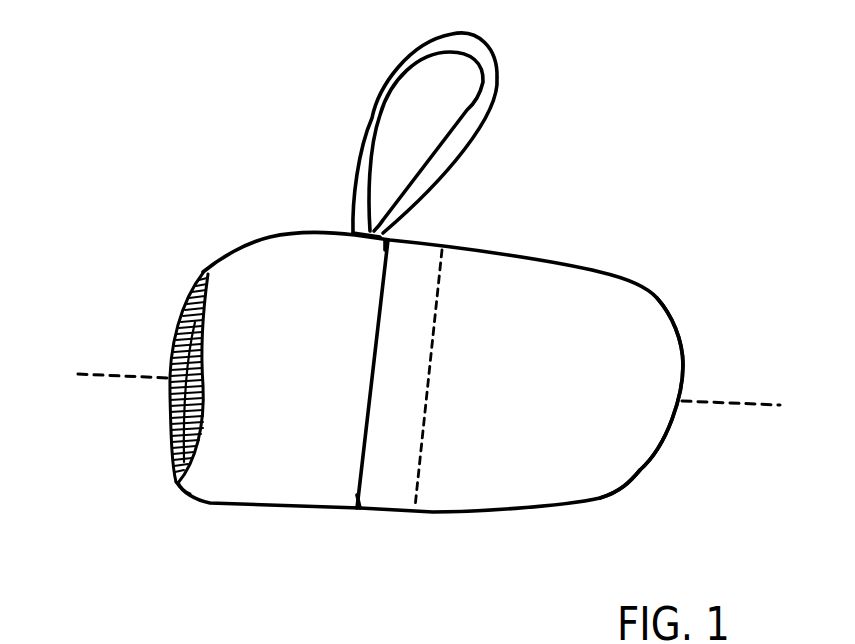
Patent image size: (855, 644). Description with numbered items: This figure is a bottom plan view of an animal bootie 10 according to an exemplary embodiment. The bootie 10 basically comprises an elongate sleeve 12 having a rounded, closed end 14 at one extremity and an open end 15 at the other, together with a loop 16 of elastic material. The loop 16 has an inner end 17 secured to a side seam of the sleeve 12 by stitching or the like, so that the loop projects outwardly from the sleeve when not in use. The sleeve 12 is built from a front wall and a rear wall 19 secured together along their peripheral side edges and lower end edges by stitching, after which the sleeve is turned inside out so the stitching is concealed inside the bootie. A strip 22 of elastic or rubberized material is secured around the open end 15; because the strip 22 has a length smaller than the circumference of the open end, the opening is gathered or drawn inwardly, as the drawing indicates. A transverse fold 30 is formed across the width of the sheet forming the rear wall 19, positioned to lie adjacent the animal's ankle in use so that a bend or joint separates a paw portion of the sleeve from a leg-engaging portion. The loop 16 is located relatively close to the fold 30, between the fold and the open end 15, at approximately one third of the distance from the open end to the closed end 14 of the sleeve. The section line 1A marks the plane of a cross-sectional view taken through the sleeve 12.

The animal bootie 10 is at (567, 230).
The elongate sleeve 12 is at (272, 517).
The rounded closed end 14 is at (683, 378).
The open end 15 is at (166, 428).
The loop 16 is at (500, 80).
The inner end 17 is at (383, 237).
The rear wall 19 is at (573, 475).
The strip of elastic or rubberized material 22 is at (172, 480).
The transverse fold 30 is at (380, 513).
The section line 1A is at (424, 391).